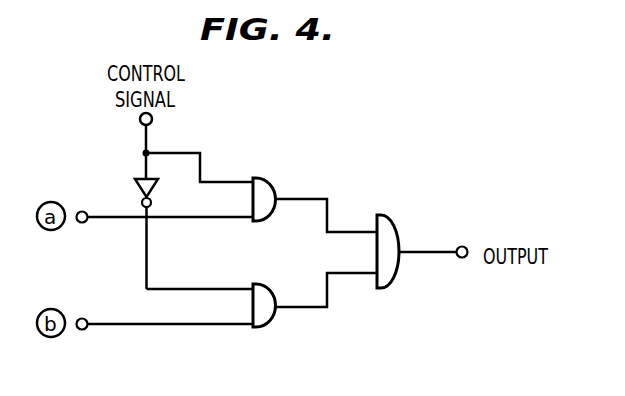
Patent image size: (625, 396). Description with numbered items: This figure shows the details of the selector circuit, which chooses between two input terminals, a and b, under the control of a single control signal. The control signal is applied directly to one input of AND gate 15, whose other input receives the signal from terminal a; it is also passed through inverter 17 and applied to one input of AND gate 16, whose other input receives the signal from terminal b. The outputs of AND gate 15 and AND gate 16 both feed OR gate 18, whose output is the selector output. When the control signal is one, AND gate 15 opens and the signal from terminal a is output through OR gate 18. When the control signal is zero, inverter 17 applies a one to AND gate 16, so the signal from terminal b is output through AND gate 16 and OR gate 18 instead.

The AND gate 15 is at (258, 177).
The AND gate 16 is at (266, 284).
The inverter 17 is at (136, 191).
The OR gate 18 is at (395, 222).